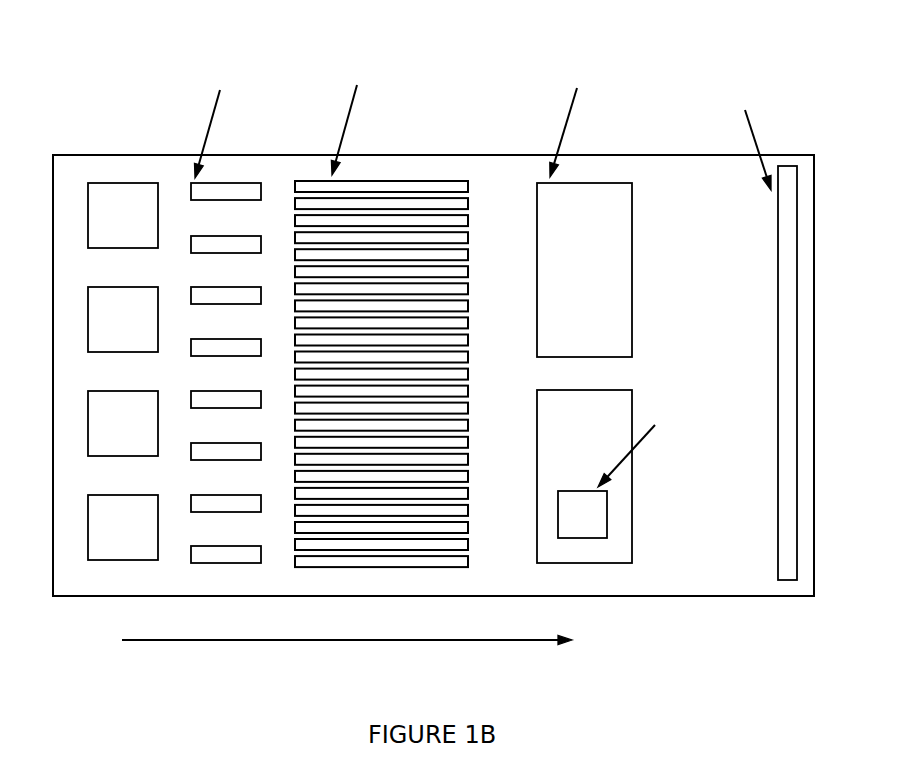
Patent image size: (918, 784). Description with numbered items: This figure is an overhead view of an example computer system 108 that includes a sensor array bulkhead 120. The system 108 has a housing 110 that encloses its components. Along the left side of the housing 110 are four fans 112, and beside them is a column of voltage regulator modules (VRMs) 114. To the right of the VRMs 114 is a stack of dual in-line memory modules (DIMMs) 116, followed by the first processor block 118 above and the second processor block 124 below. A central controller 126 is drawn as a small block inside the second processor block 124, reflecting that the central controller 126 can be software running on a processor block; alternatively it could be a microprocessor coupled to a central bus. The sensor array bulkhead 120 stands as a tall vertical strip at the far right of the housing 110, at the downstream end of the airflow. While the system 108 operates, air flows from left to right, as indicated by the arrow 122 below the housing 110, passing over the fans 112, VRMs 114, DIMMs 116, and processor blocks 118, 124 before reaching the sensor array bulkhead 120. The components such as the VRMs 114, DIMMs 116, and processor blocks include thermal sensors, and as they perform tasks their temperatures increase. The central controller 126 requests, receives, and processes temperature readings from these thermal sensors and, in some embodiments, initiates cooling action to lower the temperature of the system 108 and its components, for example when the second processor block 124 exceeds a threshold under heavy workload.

The computer system 108 is at (84, 42).
The housing 110 is at (88, 155).
The fans 112 is at (87, 220).
The voltage regulator modules (VRMs) 114 is at (233, 183).
The dual in-line memory modules (DIMMs) 116 is at (392, 181).
The processor block 1 118 is at (578, 183).
The sensor array bulkhead 120 is at (797, 166).
The arrow indicating direction of airflow 122 is at (215, 643).
The processor block 2 124 is at (610, 565).
The central controller 126 is at (607, 520).